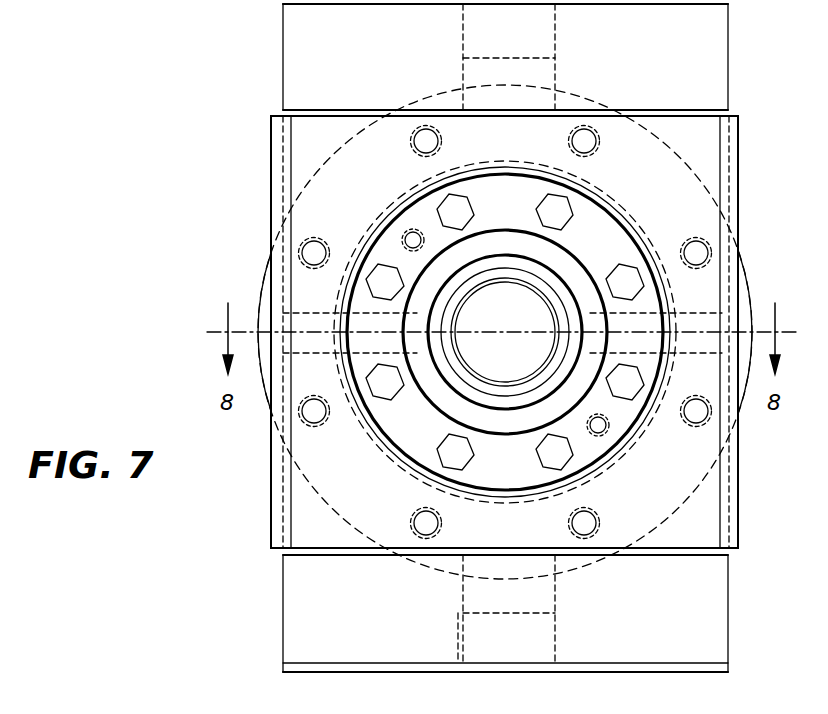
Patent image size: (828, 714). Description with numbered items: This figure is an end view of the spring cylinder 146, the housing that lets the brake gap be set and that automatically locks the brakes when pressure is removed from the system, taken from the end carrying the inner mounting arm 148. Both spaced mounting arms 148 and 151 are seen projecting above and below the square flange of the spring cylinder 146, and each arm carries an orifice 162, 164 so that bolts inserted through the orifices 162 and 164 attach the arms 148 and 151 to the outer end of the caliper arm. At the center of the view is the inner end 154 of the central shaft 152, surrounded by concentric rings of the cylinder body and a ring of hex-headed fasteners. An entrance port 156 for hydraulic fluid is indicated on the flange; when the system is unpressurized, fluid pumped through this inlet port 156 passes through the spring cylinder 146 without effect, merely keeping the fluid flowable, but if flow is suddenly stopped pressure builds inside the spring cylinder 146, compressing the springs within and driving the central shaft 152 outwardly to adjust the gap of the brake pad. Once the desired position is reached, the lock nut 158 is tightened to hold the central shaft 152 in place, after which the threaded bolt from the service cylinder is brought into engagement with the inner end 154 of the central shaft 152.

The spring cylinder 146 is at (220, 205).
The mounting arm 148 is at (708, 43).
The mounting arm 151 is at (728, 633).
The central shaft 152 is at (288, 242).
The inner end of central shaft 154 is at (506, 300).
The entrance port 156 is at (642, 325).
The lock nut 158 is at (350, 400).
The orifice 162 is at (490, 636).
The orifice 164 is at (482, 35).